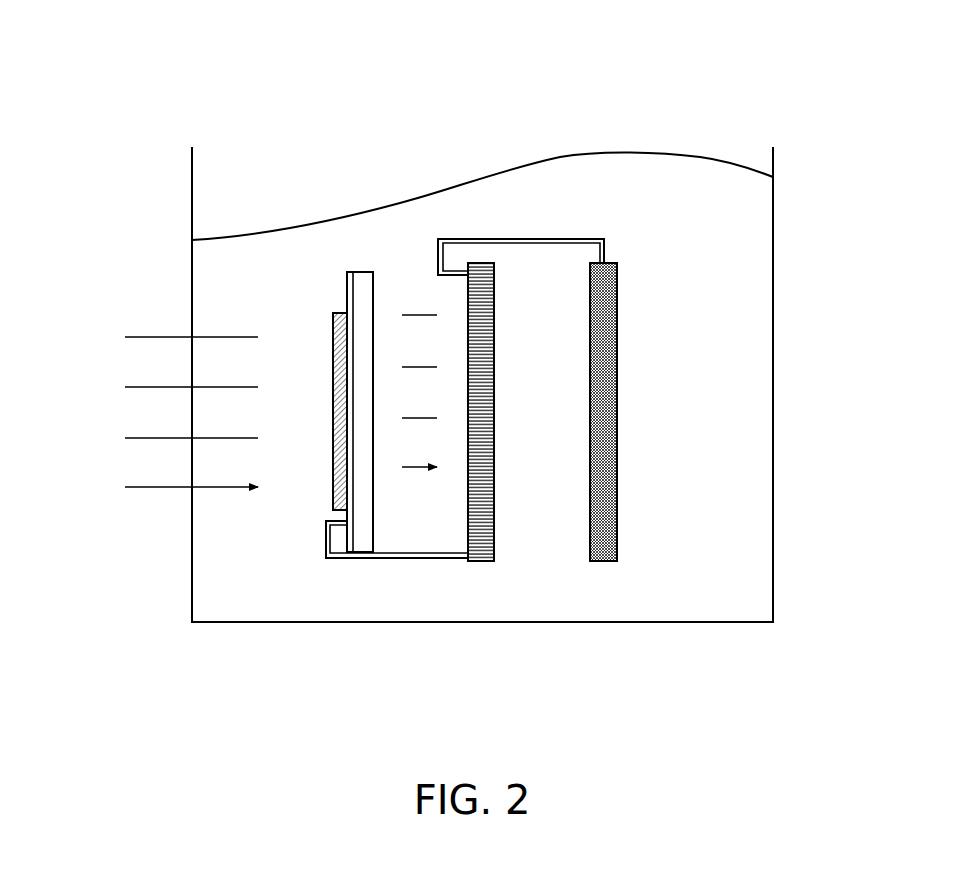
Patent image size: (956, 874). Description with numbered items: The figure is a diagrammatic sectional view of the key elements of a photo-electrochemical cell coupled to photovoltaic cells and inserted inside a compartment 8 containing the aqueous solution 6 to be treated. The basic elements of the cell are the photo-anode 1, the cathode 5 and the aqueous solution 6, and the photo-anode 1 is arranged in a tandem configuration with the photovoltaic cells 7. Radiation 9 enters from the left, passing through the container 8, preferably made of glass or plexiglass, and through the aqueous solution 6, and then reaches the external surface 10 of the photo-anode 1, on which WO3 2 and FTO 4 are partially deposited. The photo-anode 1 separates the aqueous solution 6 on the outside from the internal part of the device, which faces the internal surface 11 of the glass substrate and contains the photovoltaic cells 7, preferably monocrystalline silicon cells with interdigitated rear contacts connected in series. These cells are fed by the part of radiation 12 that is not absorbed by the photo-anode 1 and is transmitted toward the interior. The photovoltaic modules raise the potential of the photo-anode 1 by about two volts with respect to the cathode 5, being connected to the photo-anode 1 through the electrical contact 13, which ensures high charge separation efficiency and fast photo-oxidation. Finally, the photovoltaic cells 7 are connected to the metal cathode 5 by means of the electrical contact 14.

The photo-anode 1 is at (359, 250).
The WO3 2 is at (333, 492).
The FTO 4 is at (347, 300).
The cathode 5 is at (617, 288).
The aqueous solution 6 is at (220, 592).
The photovoltaic cells 7 is at (480, 268).
The compartment 8 is at (773, 602).
The radiation 9 is at (145, 380).
The external surface 10 is at (347, 287).
The internal surface 11 is at (373, 281).
The part of radiation 12 is at (417, 497).
The electrical contact 13 is at (405, 558).
The electrical contact 14 is at (562, 238).